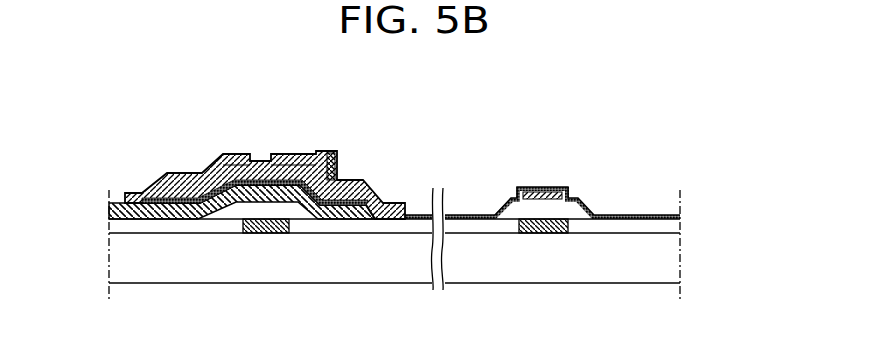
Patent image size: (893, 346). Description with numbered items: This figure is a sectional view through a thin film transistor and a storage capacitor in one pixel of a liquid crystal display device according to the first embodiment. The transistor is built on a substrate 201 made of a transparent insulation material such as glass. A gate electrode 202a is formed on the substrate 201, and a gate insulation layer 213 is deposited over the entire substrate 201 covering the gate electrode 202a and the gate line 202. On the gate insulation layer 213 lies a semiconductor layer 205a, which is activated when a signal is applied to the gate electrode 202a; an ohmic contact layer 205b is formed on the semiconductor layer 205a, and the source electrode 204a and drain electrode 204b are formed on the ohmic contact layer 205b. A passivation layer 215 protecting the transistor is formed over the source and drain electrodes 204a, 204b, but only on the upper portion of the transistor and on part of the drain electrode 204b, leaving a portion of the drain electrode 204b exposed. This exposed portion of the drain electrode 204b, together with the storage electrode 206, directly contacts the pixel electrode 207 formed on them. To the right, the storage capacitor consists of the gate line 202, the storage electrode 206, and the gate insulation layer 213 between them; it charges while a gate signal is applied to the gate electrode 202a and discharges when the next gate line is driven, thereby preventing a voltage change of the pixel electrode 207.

The substrate 201 is at (675, 268).
The gate line 202 is at (544, 233).
The gate electrode 202a is at (266, 233).
The gate insulation layer 213 is at (110, 229).
The passivation layer 215 is at (110, 210).
The source electrode 204a is at (174, 174).
The drain electrode 204b is at (328, 160).
The semiconductor layer 205a is at (263, 172).
The ohmic contact layer 205b is at (233, 165).
The storage electrode 206 is at (547, 194).
The pixel electrode 207 is at (473, 215).